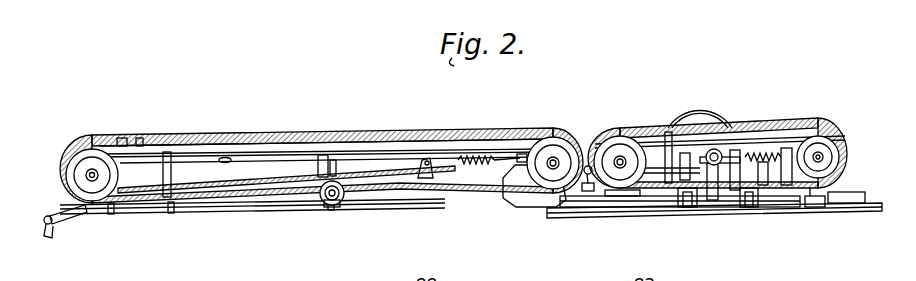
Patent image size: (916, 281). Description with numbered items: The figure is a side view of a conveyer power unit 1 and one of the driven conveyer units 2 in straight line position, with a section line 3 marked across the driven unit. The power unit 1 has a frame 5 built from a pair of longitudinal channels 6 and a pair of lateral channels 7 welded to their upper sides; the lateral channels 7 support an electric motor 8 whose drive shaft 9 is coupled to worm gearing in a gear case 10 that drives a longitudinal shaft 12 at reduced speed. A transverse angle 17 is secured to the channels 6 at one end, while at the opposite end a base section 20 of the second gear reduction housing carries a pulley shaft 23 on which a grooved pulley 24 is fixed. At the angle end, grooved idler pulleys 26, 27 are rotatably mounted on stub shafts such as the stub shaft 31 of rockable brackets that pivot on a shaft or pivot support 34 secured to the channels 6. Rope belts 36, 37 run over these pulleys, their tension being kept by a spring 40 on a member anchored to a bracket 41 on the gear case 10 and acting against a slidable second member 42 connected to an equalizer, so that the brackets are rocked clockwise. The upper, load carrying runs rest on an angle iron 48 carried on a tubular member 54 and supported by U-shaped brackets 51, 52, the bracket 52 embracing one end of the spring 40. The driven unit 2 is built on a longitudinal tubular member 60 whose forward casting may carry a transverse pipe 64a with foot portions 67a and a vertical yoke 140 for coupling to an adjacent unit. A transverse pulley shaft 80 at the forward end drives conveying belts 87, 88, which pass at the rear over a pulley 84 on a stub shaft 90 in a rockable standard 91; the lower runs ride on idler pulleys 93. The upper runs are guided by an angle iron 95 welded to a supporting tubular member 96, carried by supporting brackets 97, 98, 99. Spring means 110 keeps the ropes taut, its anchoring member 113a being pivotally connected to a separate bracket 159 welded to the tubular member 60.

The conveyer power unit 1 is at (749, 121).
The driven conveyer unit 2 is at (429, 122).
The section line 3- 3 is at (310, 124).
The base or frame 5 is at (677, 209).
The longitudinal channels 6 is at (865, 195).
The lateral channels 7 is at (690, 208).
The electric motor 8 is at (702, 111).
The motor drive shaft 9 is at (728, 157).
The gear case 10 is at (719, 152).
The longitudinal shaft 12 is at (630, 198).
The transverse angle 17 is at (838, 192).
The base section 20 is at (612, 206).
The pulley shaft 23 is at (617, 160).
The grooved pulley 24 is at (652, 174).
The grooved idler pulley 26 is at (830, 148).
The grooved idler pulley 27 is at (812, 119).
The stub shaft 31 is at (824, 157).
The shaft or pivot support 34 is at (817, 207).
The rope belt 36 is at (628, 138).
The rope belt 37 is at (613, 129).
The spring 40 is at (763, 186).
The bracket 41 is at (735, 190).
The second member 42 is at (786, 186).
The angle iron 48 is at (667, 132).
The bracket 51 is at (686, 152).
The bracket 52 is at (788, 138).
The tubular member 54 is at (765, 150).
The longitudinal tubular member 60 is at (265, 207).
The transverse pipe 64a is at (52, 212).
The foot portion 67a is at (47, 238).
The transverse pulley shaft 80 is at (88, 172).
The rear pulley 84 is at (558, 150).
The conveying belt 87 is at (350, 142).
The conveying belt 88 is at (372, 131).
The stub shaft 90 is at (551, 167).
The rockable standard 91 is at (333, 160).
The idler pulley 93 is at (340, 205).
The angle iron 95 is at (202, 152).
The supporting tubular member 96 is at (228, 158).
The supporting bracket 97 is at (166, 153).
The supporting bracket 98 is at (320, 158).
The supporting bracket 99 is at (475, 156).
The spring means 110 is at (500, 154).
The anchoring member 113a is at (435, 162).
The vertical yoke 140 is at (584, 189).
The bracket 159 is at (423, 182).